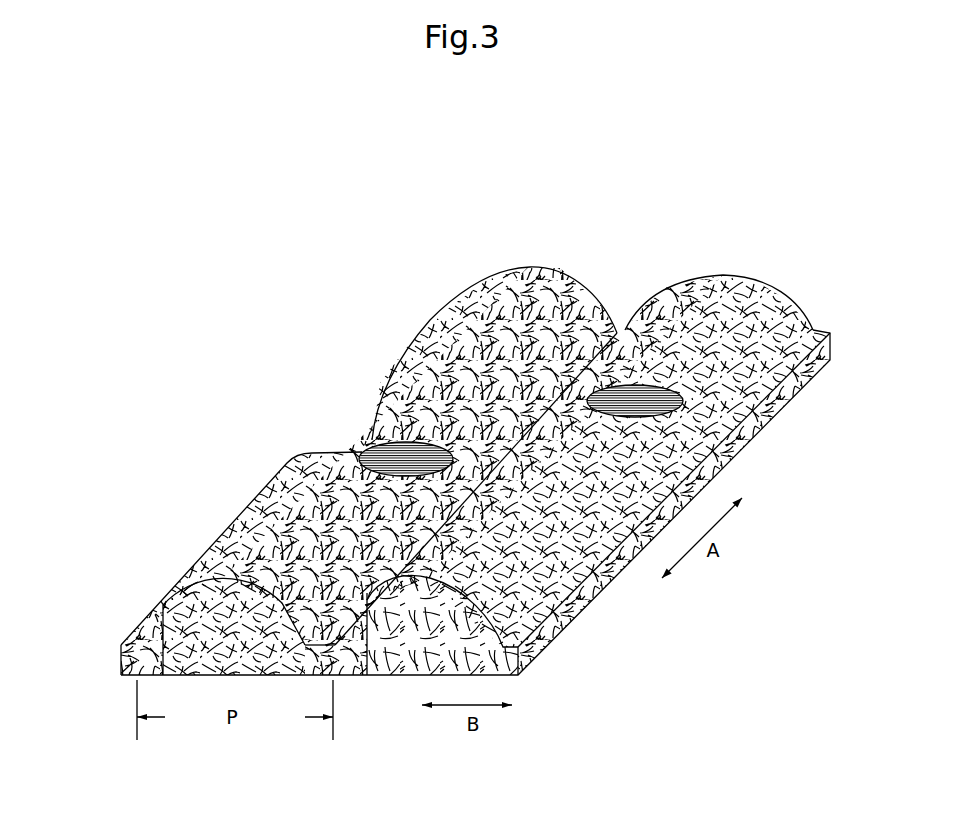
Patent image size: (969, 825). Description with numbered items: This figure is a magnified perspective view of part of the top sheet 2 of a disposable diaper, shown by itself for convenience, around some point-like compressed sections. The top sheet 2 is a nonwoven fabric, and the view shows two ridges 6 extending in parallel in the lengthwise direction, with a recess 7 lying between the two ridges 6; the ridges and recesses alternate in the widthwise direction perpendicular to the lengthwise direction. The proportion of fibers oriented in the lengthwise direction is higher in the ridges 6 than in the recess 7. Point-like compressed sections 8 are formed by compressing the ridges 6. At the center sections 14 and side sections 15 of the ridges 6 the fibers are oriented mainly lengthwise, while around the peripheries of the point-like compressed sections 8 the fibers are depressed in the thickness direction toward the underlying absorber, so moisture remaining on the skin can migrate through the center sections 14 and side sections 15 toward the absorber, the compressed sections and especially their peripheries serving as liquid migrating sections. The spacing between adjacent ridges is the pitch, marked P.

The top sheet 2 is at (514, 152).
The ridges 6 is at (541, 273).
The recess 7 is at (631, 310).
The point-like compressed sections 8 is at (395, 455).
The center sections 14 is at (216, 557).
The side sections 15 is at (150, 582).